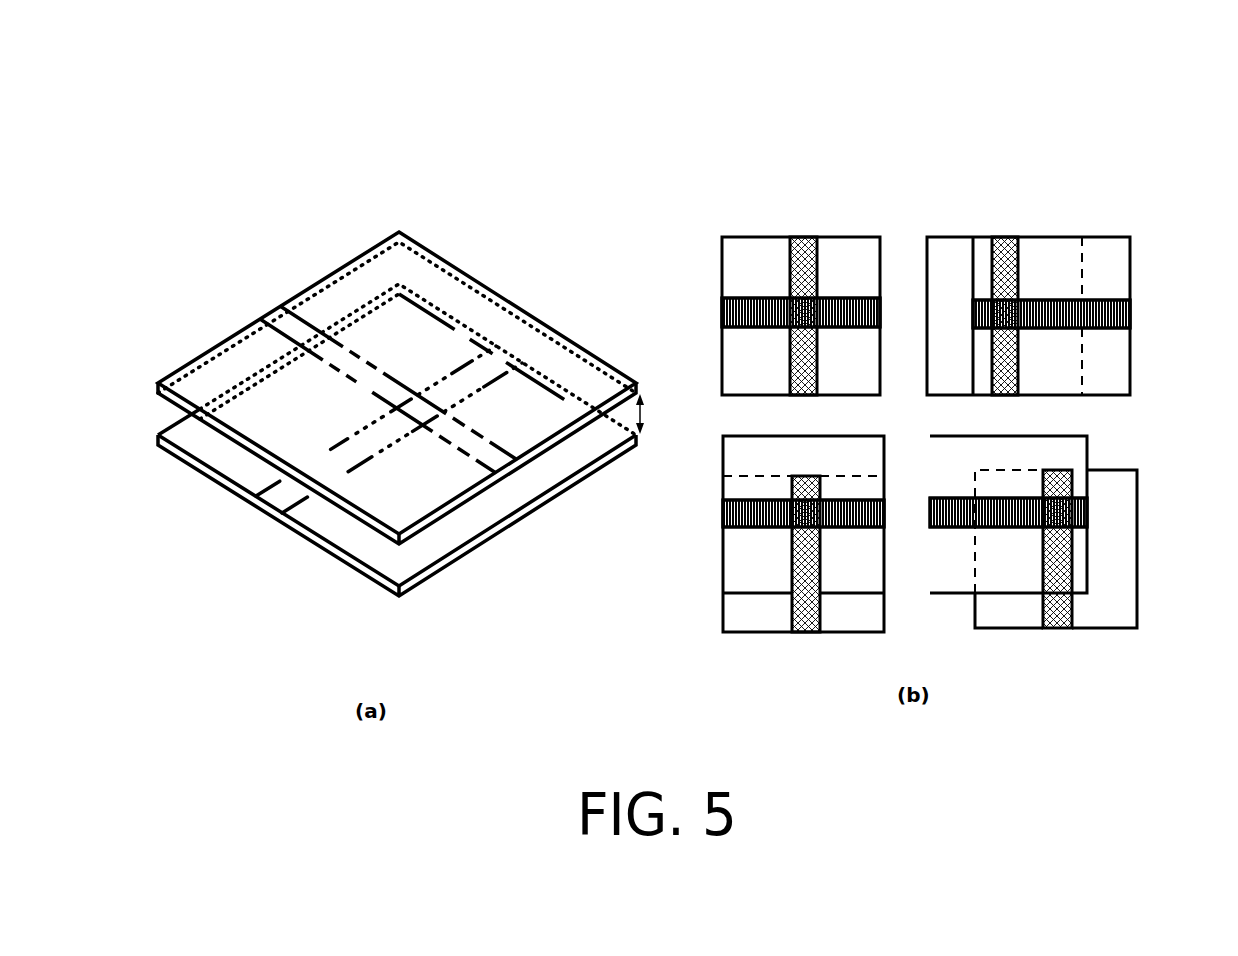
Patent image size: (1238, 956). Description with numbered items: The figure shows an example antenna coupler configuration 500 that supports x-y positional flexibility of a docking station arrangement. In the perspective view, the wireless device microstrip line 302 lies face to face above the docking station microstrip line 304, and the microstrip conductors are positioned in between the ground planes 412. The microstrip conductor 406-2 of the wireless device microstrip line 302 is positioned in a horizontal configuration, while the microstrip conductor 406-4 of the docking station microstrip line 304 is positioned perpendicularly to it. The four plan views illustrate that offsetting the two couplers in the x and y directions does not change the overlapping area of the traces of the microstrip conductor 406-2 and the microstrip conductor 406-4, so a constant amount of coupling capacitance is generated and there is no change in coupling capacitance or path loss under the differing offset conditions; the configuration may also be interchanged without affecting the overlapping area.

The antenna coupler configuration 500 is at (225, 128).
The wireless device microstrip line 302 is at (200, 331).
The docking station microstrip line 304 is at (200, 478).
The microstrip conductor 406-2 is at (280, 308).
The microstrip conductor 406-4 is at (268, 512).
The ground planes 412 is at (505, 282).